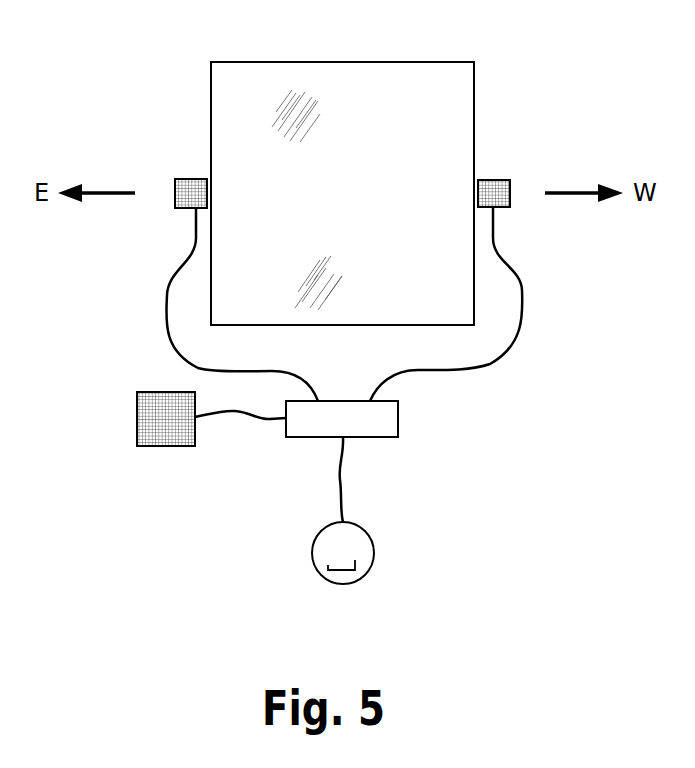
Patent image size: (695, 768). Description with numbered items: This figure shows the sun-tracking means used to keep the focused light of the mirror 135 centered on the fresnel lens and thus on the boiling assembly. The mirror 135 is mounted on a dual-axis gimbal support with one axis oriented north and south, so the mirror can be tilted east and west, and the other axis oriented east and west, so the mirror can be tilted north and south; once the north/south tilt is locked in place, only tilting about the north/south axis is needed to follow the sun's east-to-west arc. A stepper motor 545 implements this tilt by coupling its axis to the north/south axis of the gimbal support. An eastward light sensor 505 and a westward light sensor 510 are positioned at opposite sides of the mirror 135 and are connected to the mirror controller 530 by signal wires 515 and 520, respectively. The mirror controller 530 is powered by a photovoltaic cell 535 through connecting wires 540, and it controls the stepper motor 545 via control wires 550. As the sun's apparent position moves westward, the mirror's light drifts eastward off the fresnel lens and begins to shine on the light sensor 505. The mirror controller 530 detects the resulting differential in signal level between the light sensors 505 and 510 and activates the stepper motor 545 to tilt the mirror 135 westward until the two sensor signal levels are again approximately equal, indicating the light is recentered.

The mirror 135 is at (307, 62).
The light sensor 505 is at (182, 179).
The light sensor 510 is at (500, 180).
The signal wire 515 is at (167, 298).
The signal wire 520 is at (522, 287).
The mirror controller 530 is at (398, 418).
The photovoltaic cell 535 is at (137, 412).
The connecting wires 540 is at (263, 421).
The stepper motor 545 is at (312, 547).
The control wires 550 is at (338, 484).